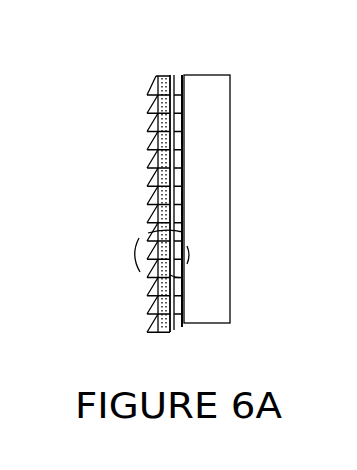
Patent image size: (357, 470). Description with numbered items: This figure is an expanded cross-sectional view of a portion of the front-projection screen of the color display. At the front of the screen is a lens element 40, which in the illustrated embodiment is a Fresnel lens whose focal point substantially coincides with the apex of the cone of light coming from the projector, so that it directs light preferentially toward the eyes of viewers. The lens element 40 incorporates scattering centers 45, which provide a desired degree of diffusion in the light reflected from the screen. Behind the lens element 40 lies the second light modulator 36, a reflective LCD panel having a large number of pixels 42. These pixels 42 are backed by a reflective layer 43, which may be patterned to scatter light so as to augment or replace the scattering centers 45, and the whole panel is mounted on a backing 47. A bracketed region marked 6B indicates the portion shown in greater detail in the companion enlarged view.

The second light modulator 36 is at (171, 75).
The lens element 40 is at (160, 75).
The pixels 42 is at (160, 125).
The reflective layer 43 is at (182, 76).
The scattering centers 45 is at (159, 98).
The backing 47 is at (207, 75).
The detail region of FIG. 6B is at (142, 235).